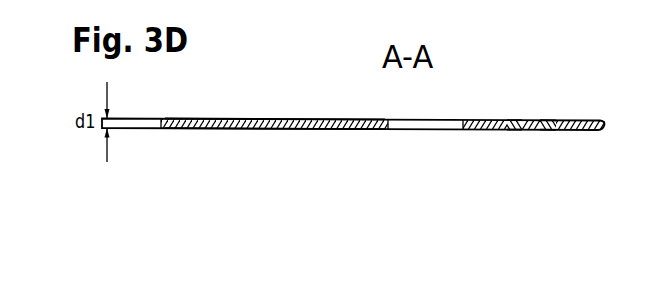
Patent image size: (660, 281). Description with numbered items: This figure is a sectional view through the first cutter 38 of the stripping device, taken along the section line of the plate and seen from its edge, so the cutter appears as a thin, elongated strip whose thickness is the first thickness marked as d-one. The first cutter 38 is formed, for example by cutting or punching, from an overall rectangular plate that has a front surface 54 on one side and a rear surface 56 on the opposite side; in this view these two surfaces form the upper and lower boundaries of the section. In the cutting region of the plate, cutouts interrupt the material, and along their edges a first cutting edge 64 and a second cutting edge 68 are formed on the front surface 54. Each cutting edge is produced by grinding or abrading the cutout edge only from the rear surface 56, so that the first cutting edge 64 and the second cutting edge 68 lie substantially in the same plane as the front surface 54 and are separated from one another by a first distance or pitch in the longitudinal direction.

The first cutter 38 is at (306, 117).
The front surface 54 is at (258, 116).
The rear surface 56 is at (255, 134).
The first cutting edge 64 is at (557, 118).
The second cutting edge 68 is at (517, 118).